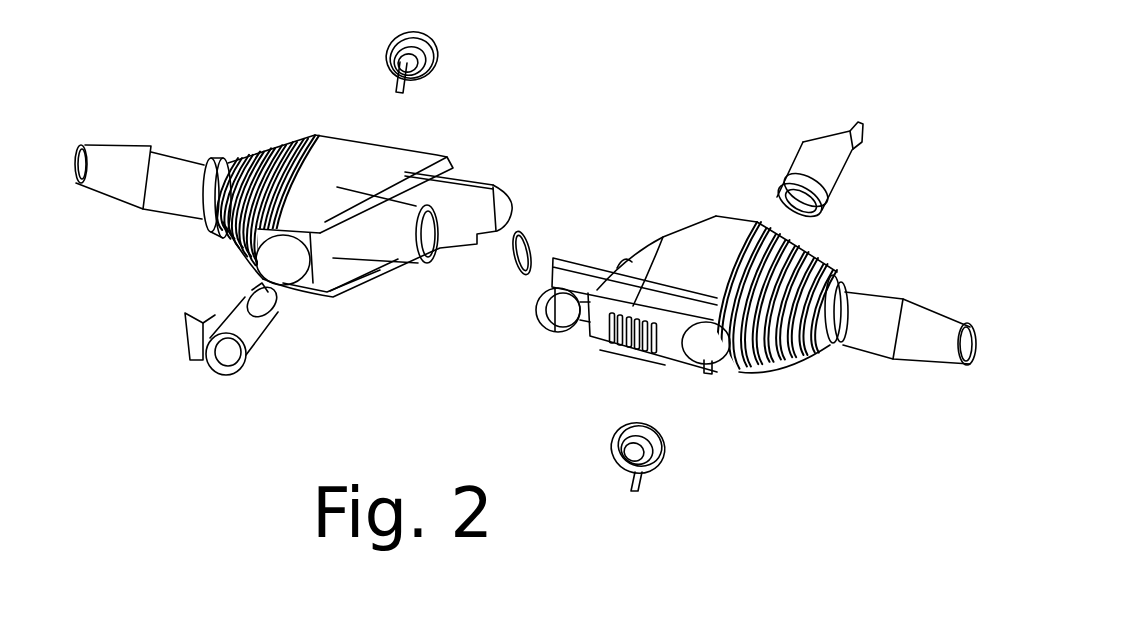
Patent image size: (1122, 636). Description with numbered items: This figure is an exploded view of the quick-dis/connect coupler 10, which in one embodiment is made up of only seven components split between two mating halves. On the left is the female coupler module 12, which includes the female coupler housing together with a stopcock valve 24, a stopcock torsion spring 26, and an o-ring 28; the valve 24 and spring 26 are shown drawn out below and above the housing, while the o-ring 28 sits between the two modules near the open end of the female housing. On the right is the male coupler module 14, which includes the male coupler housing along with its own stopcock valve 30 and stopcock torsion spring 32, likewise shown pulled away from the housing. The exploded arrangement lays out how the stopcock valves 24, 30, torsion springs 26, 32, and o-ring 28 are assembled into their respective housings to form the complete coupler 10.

The quick-dis/connect coupler 10 is at (447, 380).
The female coupler module 12 is at (268, 100).
The male coupler module 14 is at (692, 170).
The stopcock valve 24 is at (237, 312).
The stopcock torsion spring 26 is at (427, 42).
The o-ring 28 is at (530, 233).
The stopcock valve 30 is at (817, 160).
The stopcock torsion spring 32 is at (662, 442).